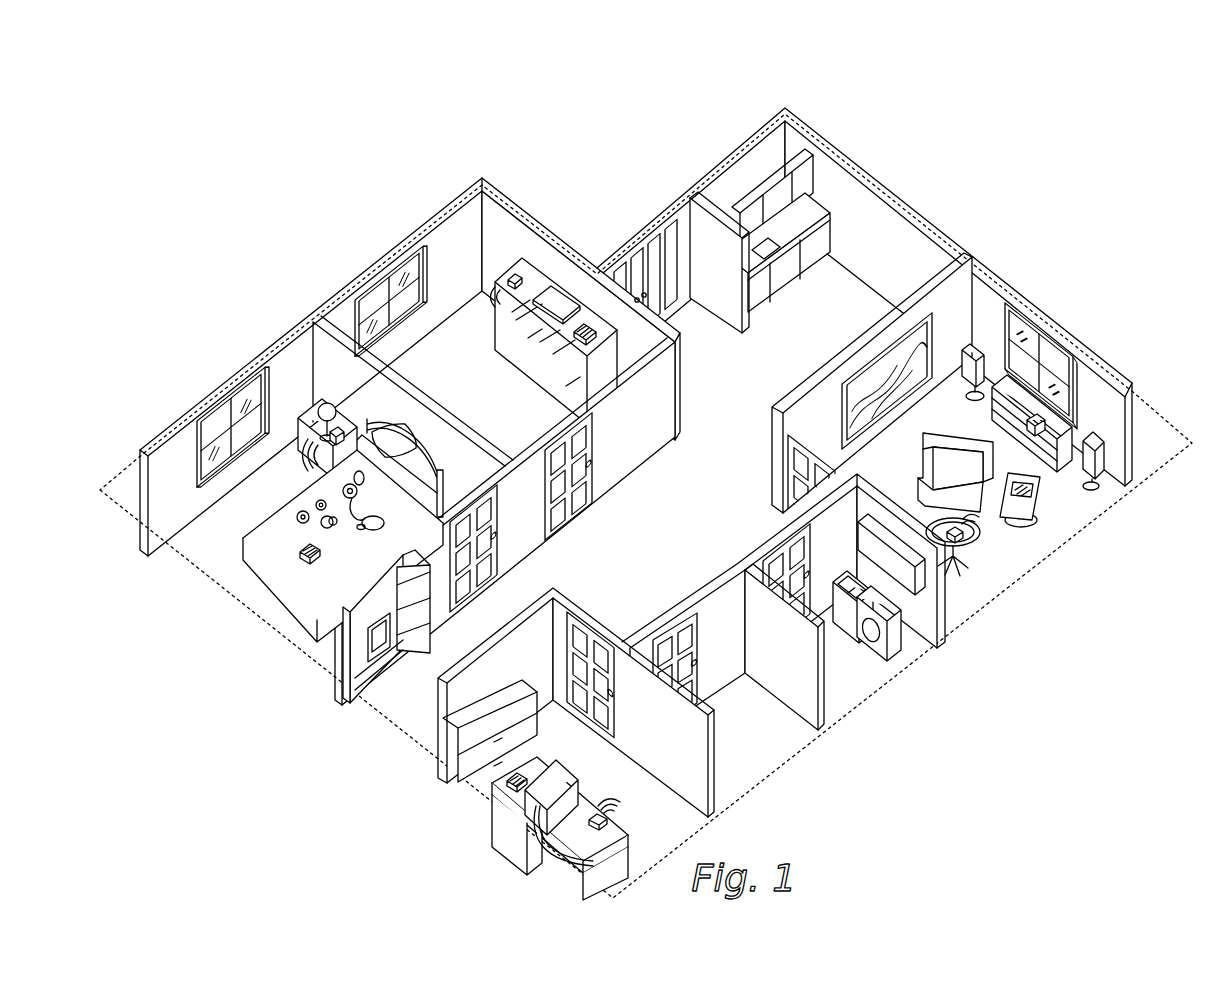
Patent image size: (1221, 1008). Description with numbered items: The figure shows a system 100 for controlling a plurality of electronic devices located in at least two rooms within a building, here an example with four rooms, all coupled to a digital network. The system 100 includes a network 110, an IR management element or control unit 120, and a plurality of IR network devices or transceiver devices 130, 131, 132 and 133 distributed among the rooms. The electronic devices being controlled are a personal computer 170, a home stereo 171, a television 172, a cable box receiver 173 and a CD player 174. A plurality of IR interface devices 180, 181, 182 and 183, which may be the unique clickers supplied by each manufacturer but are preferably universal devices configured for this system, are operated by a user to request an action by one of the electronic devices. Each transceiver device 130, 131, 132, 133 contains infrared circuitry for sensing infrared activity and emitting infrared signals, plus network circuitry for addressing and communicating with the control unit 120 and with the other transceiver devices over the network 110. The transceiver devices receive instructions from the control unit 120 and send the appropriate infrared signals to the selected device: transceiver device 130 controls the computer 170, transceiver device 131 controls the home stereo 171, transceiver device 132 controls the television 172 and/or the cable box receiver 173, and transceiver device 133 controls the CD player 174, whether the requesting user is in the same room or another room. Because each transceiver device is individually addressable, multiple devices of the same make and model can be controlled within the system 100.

The system 100 is at (1057, 96).
The network 110 is at (884, 193).
The control unit 120 is at (380, 637).
The transceiver device 130 is at (607, 824).
The transceiver device 131 is at (967, 538).
The transceiver device 132 is at (516, 272).
The transceiver device 133 is at (338, 404).
The personal computer 170 is at (522, 786).
The home stereo 171 is at (1043, 422).
The television 172 is at (606, 312).
The cable box receiver 173 is at (547, 292).
The CD player 174 is at (343, 481).
The IR interface device 180 is at (1037, 495).
The IR interface device 181 is at (504, 786).
The IR interface device 182 is at (299, 556).
The IR interface device 183 is at (580, 318).